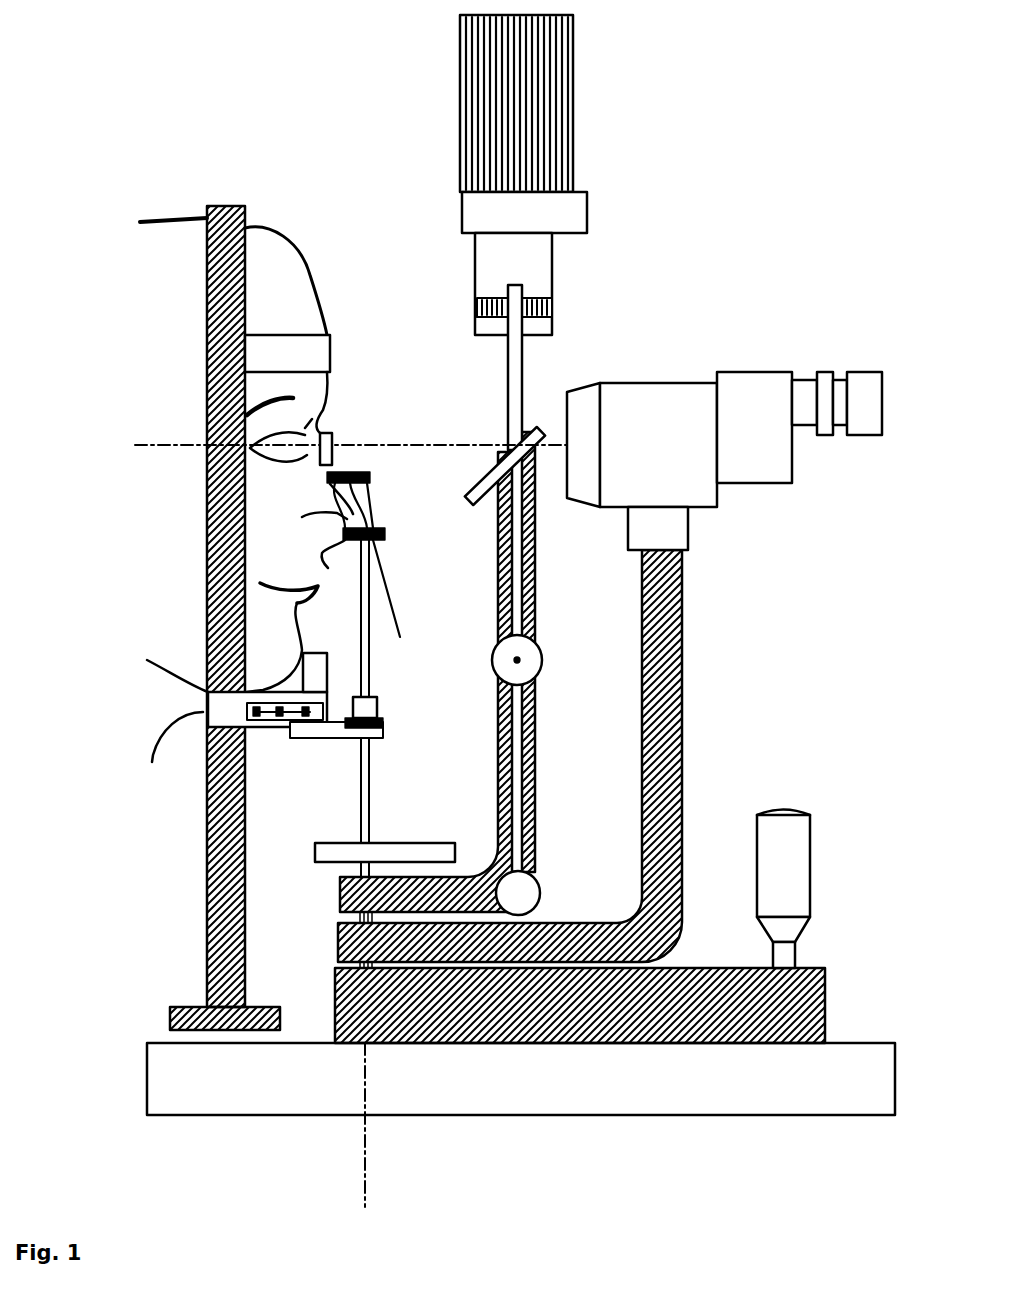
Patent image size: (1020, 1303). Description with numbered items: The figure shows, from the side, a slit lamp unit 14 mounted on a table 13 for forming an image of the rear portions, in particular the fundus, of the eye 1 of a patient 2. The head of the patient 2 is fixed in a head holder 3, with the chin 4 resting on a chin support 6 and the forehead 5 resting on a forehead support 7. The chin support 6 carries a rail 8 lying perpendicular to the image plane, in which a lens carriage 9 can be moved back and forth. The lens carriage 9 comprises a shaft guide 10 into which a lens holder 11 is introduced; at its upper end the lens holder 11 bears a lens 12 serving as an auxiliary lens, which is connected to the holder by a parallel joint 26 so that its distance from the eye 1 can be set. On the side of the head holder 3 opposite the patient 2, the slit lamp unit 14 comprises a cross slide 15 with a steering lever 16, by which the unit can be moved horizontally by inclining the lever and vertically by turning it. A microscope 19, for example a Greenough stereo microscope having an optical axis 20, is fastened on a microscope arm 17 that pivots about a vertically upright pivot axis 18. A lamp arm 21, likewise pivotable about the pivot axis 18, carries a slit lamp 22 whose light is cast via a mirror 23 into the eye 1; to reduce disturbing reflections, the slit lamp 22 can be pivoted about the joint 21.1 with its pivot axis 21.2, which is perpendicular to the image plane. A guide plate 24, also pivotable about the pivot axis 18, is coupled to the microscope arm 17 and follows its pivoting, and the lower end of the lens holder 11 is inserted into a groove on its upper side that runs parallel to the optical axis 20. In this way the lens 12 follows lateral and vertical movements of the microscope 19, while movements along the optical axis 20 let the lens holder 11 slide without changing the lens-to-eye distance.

The eye 1 is at (323, 420).
The patient 2 is at (150, 417).
The head holder 3 is at (185, 890).
The chin 4 is at (268, 658).
The forehead 5 is at (292, 272).
The chin support 6 is at (147, 662).
The forehead support 7 is at (323, 347).
The rail 8 is at (258, 740).
The lens carriage 9 is at (315, 742).
The shaft guide 10 is at (382, 714).
The lens holder 11 is at (370, 677).
The lens 12 is at (337, 441).
The table 13 is at (152, 1078).
The slit lamp unit 14 is at (682, 317).
The cross slide 15 is at (825, 1005).
The steering lever 16 is at (812, 872).
The microscope arm 17 is at (690, 740).
The pivot axis 18 is at (363, 1182).
The microscope 19 is at (757, 370).
The optical axis 20 is at (418, 442).
The lamp arm 21 is at (540, 765).
The joint 21.1 is at (527, 652).
The pivot axis 21.2 is at (508, 660).
The slit lamp 22 is at (583, 175).
The mirror 23 is at (477, 480).
The guide plate 24 is at (413, 846).
The parallel joint 26 is at (373, 505).